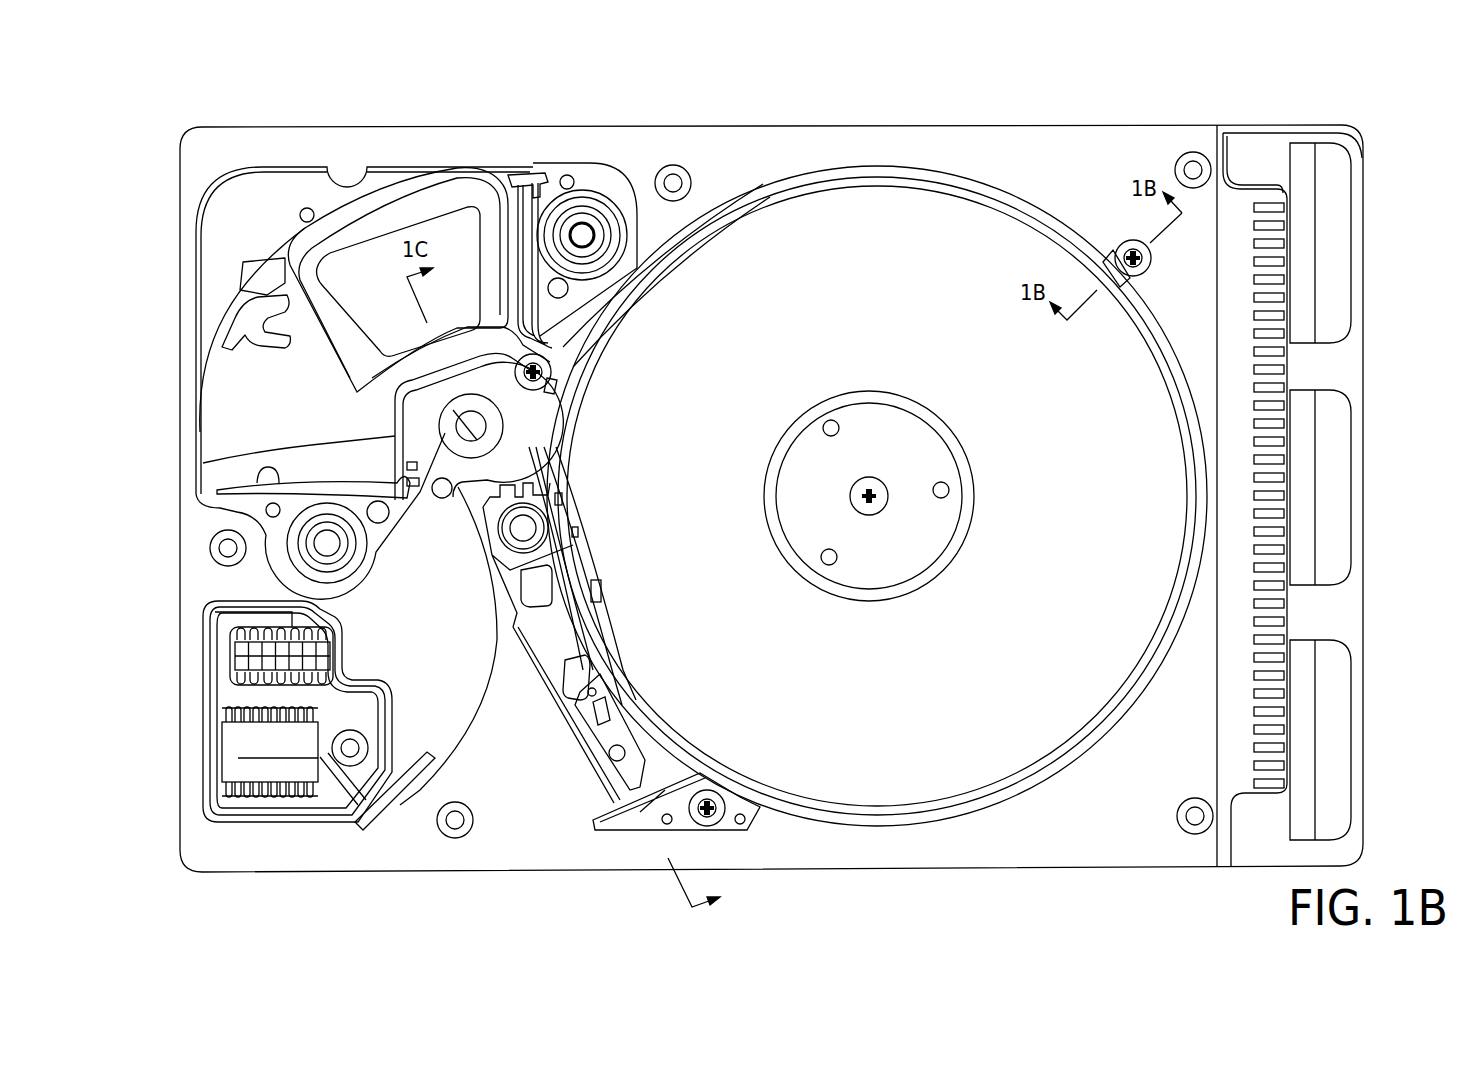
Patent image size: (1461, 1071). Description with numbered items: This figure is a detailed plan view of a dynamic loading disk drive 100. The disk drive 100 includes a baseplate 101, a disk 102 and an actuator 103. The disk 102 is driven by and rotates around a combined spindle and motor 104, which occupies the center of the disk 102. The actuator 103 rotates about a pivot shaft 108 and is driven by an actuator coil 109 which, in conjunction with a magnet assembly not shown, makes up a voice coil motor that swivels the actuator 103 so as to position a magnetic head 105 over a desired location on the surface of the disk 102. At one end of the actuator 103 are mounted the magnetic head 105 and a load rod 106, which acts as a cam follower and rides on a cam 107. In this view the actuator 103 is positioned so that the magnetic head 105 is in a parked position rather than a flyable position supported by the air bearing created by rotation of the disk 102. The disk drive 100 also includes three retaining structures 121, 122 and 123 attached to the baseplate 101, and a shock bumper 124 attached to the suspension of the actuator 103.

The dynamic loading disk drive 100 is at (1228, 102).
The baseplate 101 is at (1140, 800).
The disk 102 is at (1013, 737).
The actuator 103 is at (485, 540).
The combined spindle and motor 104 is at (876, 392).
The magnetic head 105 is at (578, 745).
The load rod 106 is at (605, 778).
The cam 107 is at (657, 808).
The pivot shaft 108 is at (458, 428).
The actuator coil 109 is at (325, 337).
The retaining structure 121 is at (1125, 248).
The retaining structure 122 is at (565, 372).
The retaining structure 123 is at (712, 822).
The shock bumper 124 is at (555, 690).